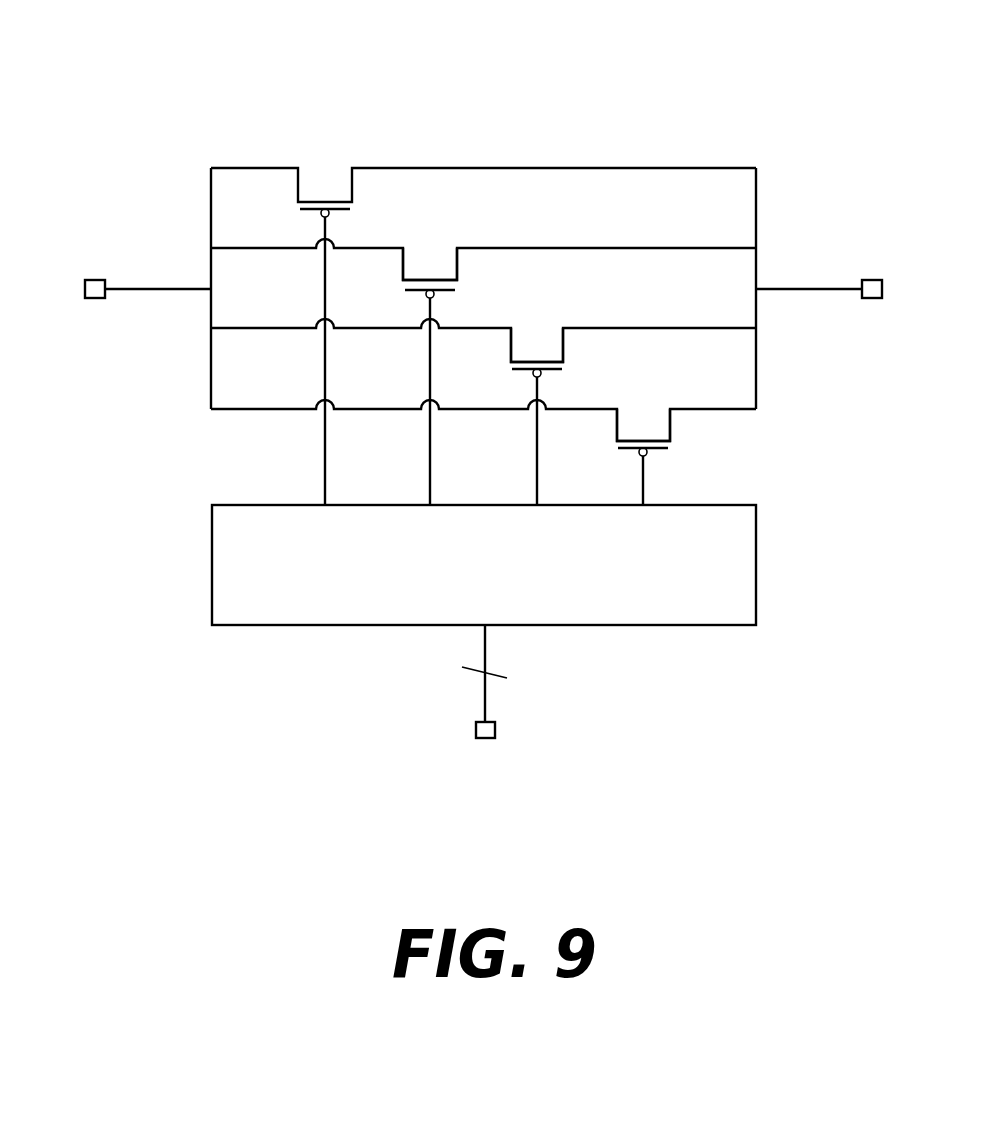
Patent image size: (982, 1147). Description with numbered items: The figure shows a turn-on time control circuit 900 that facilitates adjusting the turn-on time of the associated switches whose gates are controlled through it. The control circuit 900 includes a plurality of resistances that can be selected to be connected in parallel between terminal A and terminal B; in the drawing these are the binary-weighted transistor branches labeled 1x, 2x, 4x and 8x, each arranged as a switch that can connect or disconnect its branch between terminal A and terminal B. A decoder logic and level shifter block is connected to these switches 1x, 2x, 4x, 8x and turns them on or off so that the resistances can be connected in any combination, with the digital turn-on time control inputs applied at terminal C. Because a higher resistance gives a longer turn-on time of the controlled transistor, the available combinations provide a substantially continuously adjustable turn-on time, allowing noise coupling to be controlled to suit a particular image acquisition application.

The turn-on time control circuit 900 is at (162, 113).
The unit-size switching transistor 1x is at (483, 336).
The double-size switching transistor 2x is at (460, 376).
The quad-size switching transistor 4x is at (568, 416).
The eight-size switching transistor 8x is at (673, 457).
The terminal A is at (148, 267).
The terminal B is at (819, 267).
The digital input terminal C is at (484, 706).